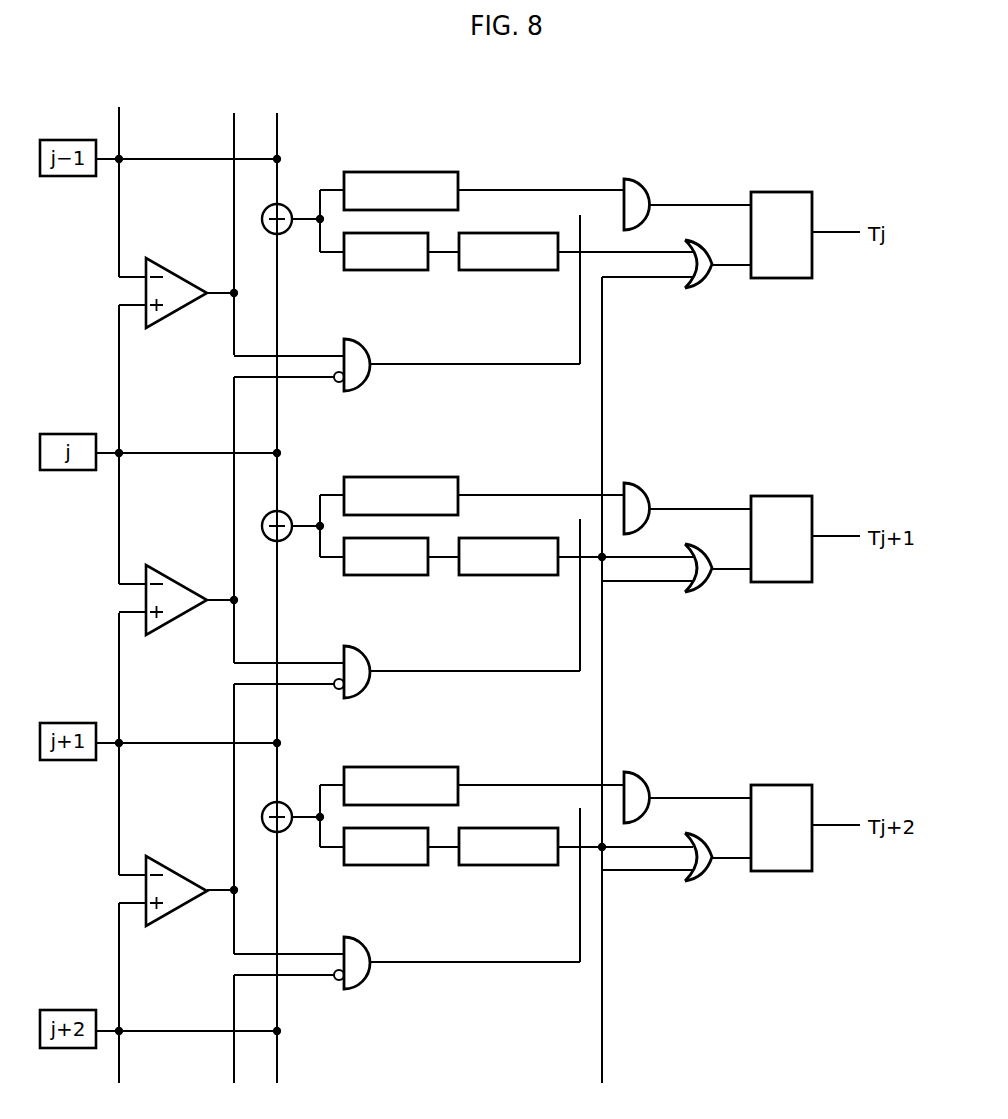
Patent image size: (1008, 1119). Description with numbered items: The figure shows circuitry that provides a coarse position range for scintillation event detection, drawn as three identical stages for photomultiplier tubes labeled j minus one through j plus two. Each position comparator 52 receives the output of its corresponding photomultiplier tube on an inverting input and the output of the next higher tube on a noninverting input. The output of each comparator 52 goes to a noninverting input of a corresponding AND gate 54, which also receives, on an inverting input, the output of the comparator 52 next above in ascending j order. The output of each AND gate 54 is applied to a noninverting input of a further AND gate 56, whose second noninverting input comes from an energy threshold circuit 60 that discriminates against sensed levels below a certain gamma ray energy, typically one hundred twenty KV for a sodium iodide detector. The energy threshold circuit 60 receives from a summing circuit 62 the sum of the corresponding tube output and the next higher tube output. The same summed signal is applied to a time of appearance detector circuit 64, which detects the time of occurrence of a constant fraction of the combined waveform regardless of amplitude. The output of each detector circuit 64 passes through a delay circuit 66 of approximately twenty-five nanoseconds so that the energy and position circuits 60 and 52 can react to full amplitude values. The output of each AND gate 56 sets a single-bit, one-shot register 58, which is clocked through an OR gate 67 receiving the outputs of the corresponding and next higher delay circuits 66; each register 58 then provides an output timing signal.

The position comparator 52 is at (178, 273).
The AND gate 54 is at (359, 344).
The further AND gate 56 is at (645, 184).
The single-bit, one-shot register 58 is at (769, 192).
The energy threshold circuit 60 is at (387, 171).
The summing circuit 62 is at (290, 207).
The time of appearance detector circuit 64 is at (406, 271).
The delay circuit 66 is at (527, 271).
The OR gate 67 is at (701, 244).